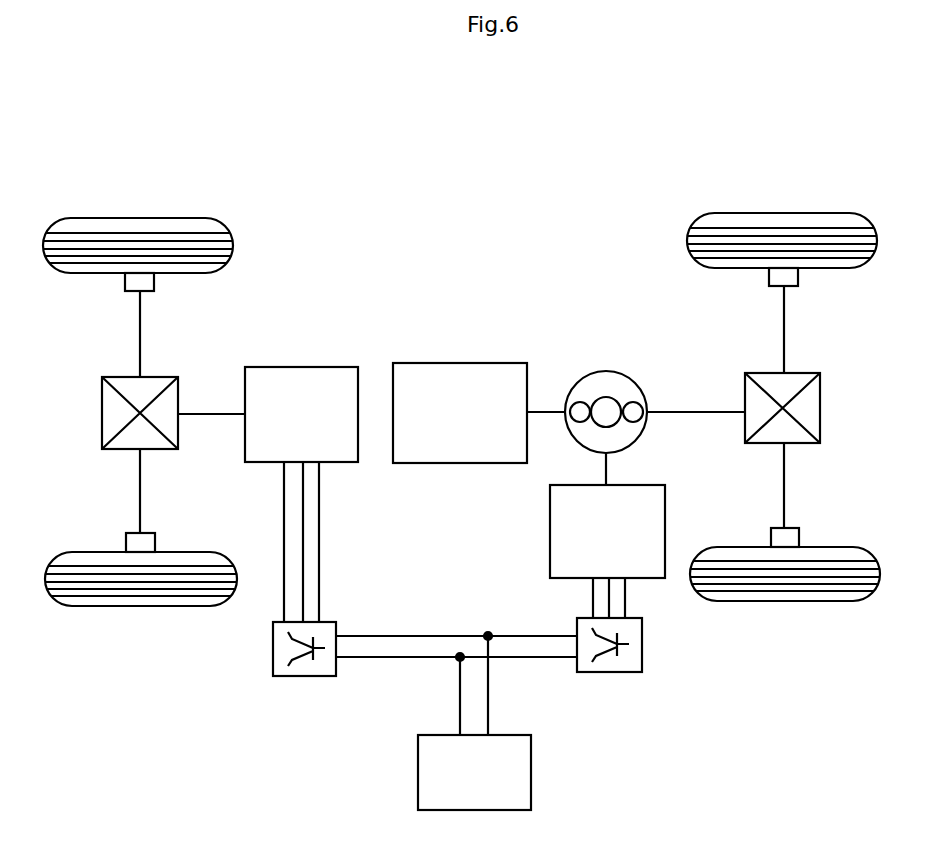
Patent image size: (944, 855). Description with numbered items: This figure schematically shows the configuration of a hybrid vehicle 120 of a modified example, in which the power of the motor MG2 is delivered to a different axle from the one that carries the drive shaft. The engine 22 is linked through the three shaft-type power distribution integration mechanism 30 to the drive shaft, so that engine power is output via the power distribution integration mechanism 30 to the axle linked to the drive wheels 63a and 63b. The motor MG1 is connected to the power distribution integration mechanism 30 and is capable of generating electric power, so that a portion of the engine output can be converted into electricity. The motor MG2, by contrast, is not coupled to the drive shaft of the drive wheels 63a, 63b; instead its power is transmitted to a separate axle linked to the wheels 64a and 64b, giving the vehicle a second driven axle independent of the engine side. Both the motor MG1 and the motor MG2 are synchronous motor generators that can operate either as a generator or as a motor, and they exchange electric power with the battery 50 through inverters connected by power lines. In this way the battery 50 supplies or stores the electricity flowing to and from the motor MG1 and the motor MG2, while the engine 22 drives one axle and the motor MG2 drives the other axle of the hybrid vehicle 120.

The hybrid vehicle 120 is at (492, 192).
The wheel 64a is at (138, 218).
The wheel 64b is at (143, 606).
The drive wheel 63a is at (783, 213).
The drive wheel 63b is at (787, 601).
The motor MG2 is at (297, 365).
The engine 22 is at (458, 363).
The power distribution integration mechanism 30 is at (607, 372).
The motor MG1 is at (552, 532).
The battery 50 is at (531, 771).